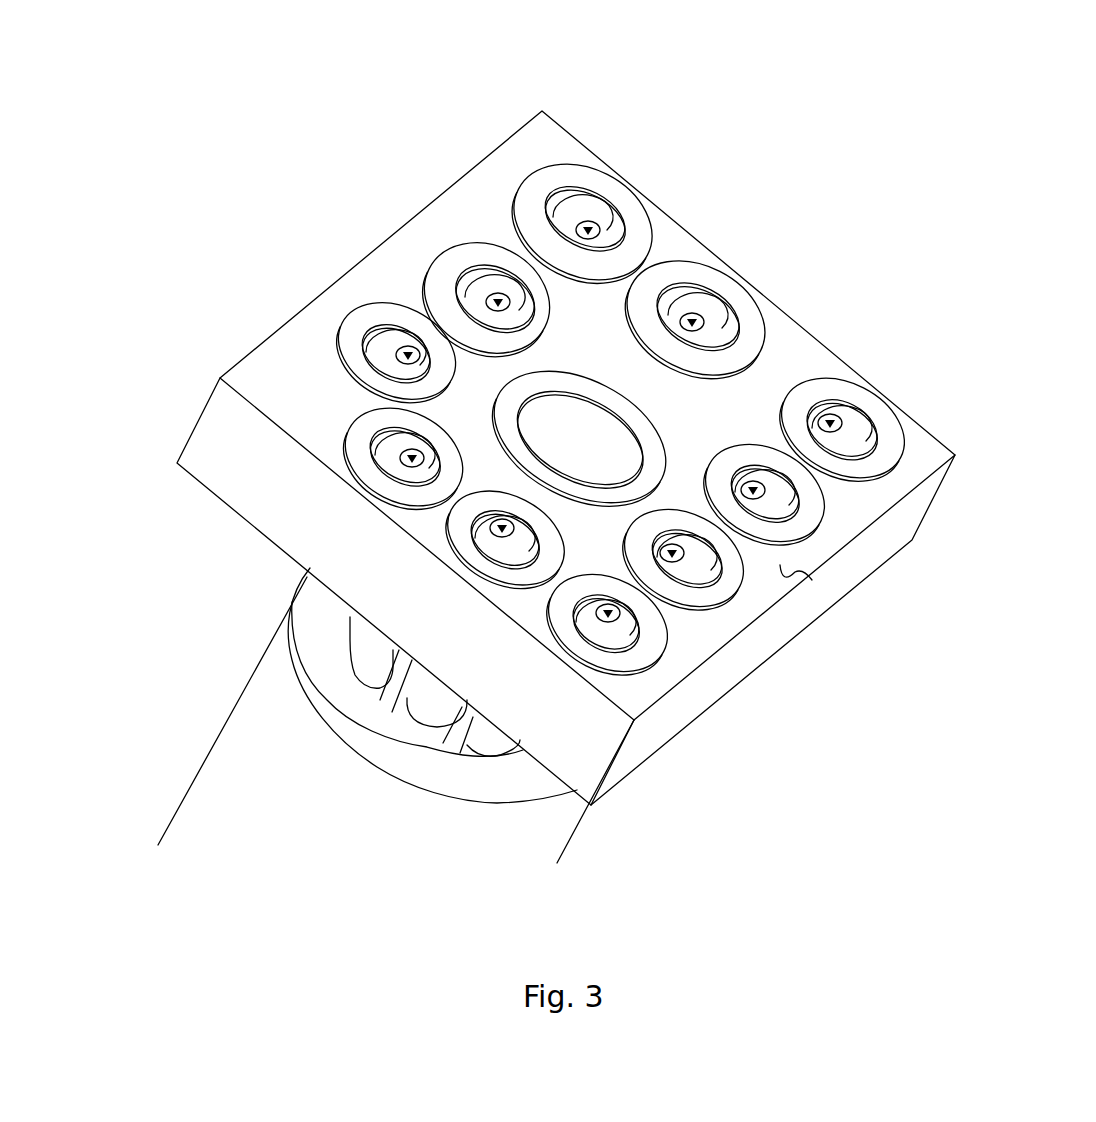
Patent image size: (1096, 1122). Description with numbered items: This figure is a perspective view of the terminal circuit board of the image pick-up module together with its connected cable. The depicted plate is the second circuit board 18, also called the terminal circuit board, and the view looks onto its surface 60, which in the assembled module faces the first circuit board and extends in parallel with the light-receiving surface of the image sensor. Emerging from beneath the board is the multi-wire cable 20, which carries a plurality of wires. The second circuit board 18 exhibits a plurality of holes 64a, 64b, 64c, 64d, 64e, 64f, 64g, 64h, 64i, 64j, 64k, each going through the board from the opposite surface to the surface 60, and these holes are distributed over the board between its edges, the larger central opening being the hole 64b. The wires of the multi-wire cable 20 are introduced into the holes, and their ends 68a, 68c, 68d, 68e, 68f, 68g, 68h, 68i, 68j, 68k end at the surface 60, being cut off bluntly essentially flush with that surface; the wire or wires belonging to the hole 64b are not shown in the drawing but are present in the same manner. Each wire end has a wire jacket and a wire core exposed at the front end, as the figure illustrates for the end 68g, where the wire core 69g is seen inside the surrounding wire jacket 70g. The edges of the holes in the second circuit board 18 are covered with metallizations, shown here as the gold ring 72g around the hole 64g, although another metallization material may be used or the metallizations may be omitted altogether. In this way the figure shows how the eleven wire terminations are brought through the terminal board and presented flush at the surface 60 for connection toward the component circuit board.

The second circuit board 18 is at (332, 523).
The multi-wire cable 20 is at (254, 788).
The surface 60 is at (756, 495).
The hole 64a is at (524, 553).
The hole 64b is at (590, 440).
The hole 64c is at (634, 618).
The hole 64d is at (383, 441).
The hole 64e is at (368, 343).
The hole 64f is at (465, 276).
The hole 64g is at (568, 188).
The hole 64h is at (684, 290).
The hole 64i is at (863, 442).
The hole 64j is at (786, 488).
The hole 64k is at (717, 563).
The wire end 68a is at (591, 805).
The wire end 68c is at (611, 616).
The wire end 68d is at (413, 457).
The wire end 68e is at (408, 355).
The wire end 68f is at (497, 300).
The wire end 68g is at (597, 227).
The wire end 68h is at (697, 318).
The wire end 68i is at (834, 422).
The wire end 68j is at (783, 495).
The wire end 68k is at (672, 553).
The wire core 69g is at (590, 227).
The wire jacket 70g is at (580, 210).
The gold ring 72g is at (525, 198).